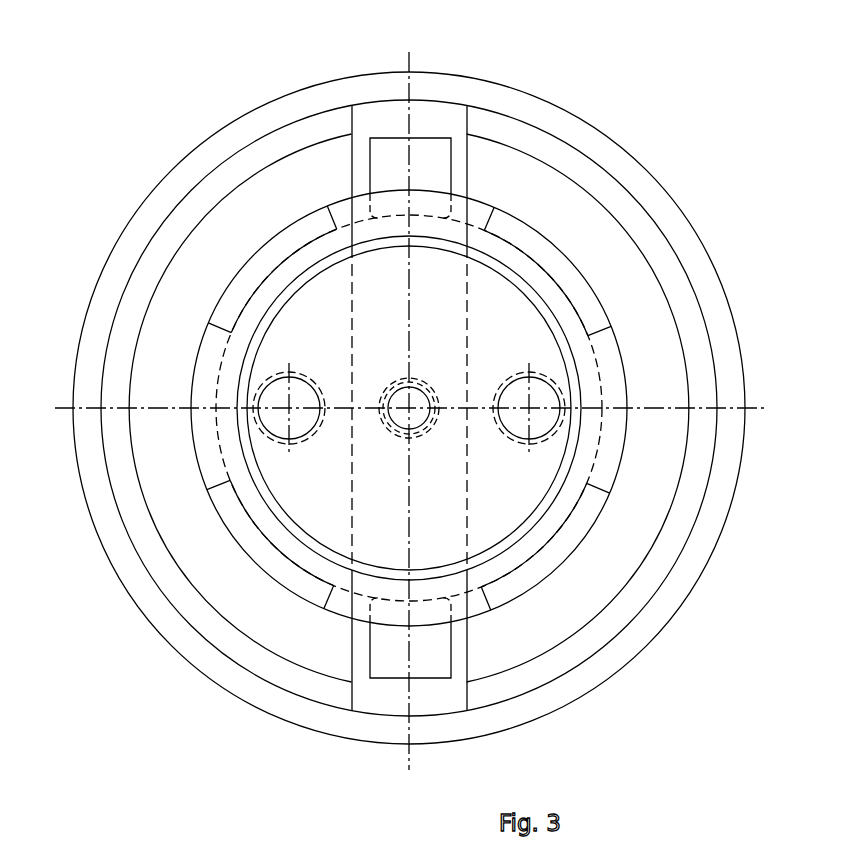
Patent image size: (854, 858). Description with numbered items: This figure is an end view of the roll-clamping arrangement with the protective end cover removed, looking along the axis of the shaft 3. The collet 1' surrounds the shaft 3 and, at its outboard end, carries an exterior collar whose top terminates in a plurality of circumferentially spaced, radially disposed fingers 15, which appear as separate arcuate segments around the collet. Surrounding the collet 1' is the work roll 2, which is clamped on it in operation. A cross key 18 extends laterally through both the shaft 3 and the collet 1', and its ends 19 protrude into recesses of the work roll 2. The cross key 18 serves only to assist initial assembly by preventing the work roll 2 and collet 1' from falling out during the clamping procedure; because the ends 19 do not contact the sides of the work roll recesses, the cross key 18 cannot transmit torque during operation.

The collet 1' is at (409, 377).
The work roll 2 is at (301, 135).
The shaft 3 is at (515, 490).
The fingers 15 is at (210, 463).
The cross key 18 is at (452, 293).
The ends of the cross key 19 is at (385, 152).